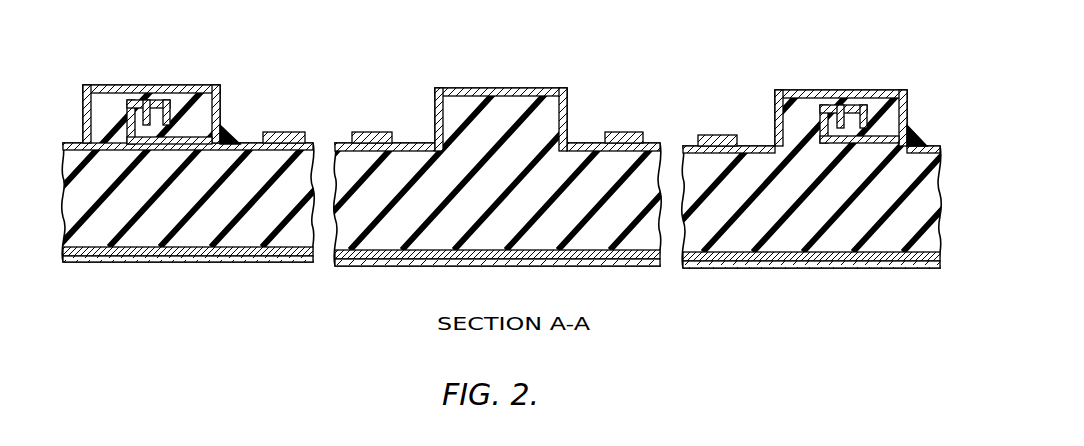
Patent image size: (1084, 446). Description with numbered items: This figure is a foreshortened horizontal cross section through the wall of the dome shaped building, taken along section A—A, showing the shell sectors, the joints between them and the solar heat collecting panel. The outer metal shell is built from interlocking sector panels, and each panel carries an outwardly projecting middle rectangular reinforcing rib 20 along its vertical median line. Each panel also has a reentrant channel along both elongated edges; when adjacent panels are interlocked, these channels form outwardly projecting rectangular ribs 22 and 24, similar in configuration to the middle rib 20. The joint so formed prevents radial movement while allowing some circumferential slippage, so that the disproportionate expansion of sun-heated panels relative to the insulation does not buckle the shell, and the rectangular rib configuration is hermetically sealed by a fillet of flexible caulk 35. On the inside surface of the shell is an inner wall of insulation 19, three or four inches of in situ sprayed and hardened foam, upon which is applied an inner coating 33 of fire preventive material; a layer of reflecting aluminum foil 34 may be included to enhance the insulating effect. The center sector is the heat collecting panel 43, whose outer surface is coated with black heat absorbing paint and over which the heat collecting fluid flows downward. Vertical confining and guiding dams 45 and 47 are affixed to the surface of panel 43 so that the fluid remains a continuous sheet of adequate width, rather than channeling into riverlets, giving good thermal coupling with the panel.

The inner wall of insulation 19 is at (534, 191).
The middle rectangular reinforcing rib 20 is at (501, 97).
The rectangular rib 22 is at (151, 94).
The rectangular rib 24 is at (841, 96).
The inner coating of fire preventive material 33 is at (501, 278).
The aluminum foil 34 is at (501, 283).
The fillet of flexible caulk 35 is at (580, 96).
The panel 43 is at (501, 98).
The vertical confining and guiding dam 45 is at (453, 105).
The vertical confining and guiding dam 47 is at (537, 107).